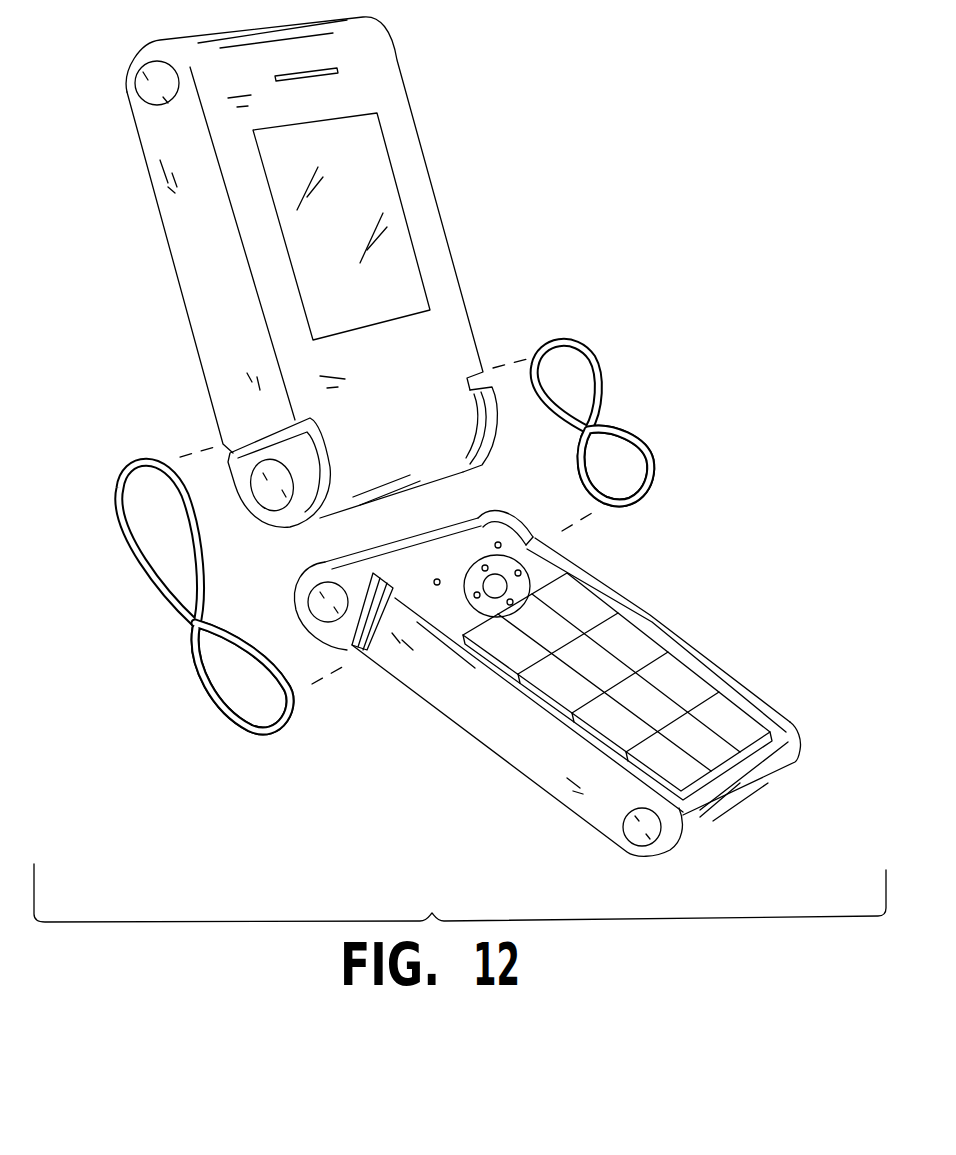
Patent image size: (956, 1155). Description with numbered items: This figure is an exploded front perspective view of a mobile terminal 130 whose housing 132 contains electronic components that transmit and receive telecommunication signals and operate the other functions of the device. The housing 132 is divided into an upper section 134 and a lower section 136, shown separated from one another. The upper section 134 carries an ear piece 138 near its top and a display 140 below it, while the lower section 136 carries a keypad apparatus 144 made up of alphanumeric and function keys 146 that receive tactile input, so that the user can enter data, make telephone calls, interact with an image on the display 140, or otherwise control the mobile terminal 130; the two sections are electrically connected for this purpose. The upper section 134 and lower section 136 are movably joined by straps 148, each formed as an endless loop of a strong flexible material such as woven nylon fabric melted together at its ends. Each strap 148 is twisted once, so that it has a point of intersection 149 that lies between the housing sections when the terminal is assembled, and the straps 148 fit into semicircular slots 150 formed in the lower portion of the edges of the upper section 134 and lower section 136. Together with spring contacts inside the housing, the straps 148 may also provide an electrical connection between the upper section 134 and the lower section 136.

The mobile terminal 130 is at (471, 198).
The housing 132 is at (178, 276).
The upper section 134 is at (458, 338).
The lower section 136 is at (450, 707).
The ear piece 138 is at (300, 79).
The display 140 is at (381, 309).
The keypad apparatus 144 is at (705, 688).
The alphanumeric and function keys 146 is at (604, 610).
The straps 148 is at (600, 367).
The point of intersection 149 is at (597, 425).
The semicircular slots 150 is at (472, 406).